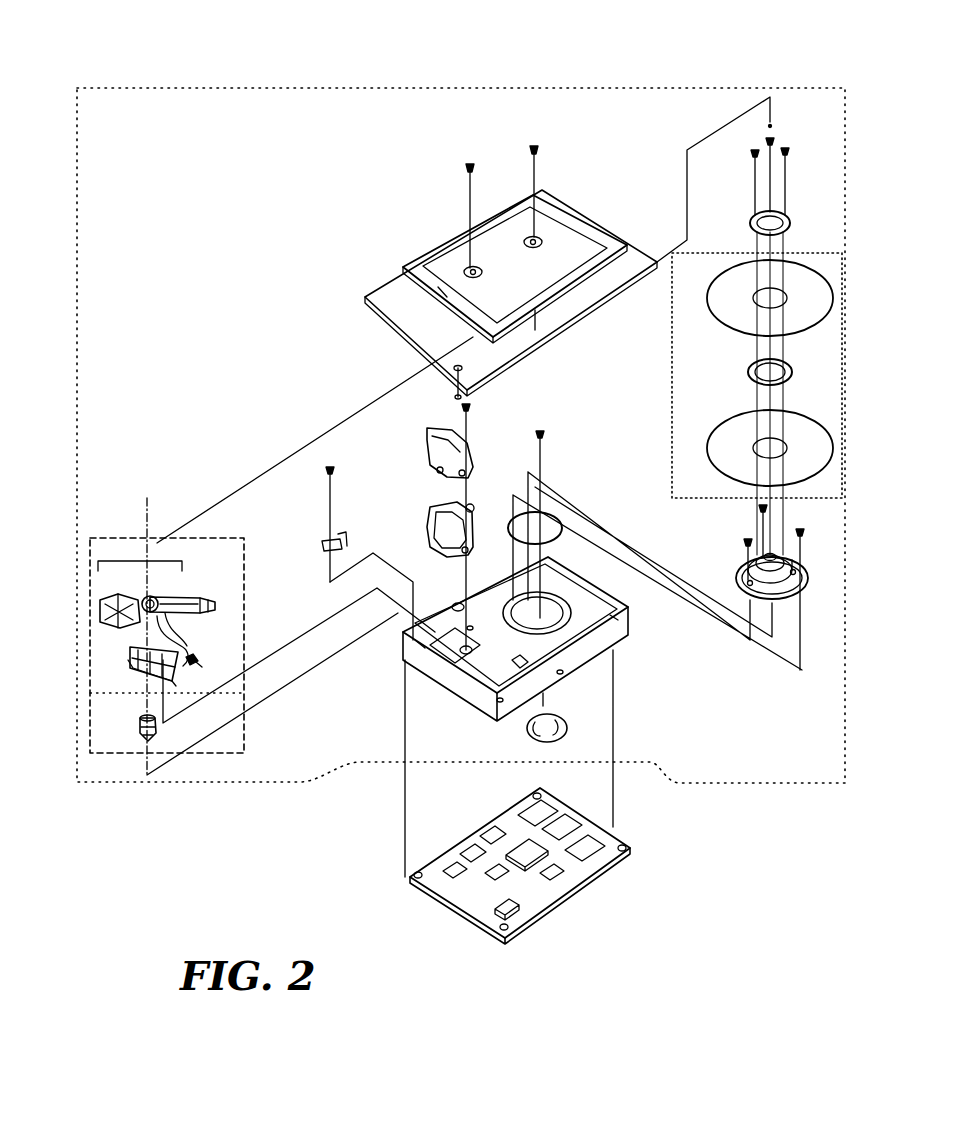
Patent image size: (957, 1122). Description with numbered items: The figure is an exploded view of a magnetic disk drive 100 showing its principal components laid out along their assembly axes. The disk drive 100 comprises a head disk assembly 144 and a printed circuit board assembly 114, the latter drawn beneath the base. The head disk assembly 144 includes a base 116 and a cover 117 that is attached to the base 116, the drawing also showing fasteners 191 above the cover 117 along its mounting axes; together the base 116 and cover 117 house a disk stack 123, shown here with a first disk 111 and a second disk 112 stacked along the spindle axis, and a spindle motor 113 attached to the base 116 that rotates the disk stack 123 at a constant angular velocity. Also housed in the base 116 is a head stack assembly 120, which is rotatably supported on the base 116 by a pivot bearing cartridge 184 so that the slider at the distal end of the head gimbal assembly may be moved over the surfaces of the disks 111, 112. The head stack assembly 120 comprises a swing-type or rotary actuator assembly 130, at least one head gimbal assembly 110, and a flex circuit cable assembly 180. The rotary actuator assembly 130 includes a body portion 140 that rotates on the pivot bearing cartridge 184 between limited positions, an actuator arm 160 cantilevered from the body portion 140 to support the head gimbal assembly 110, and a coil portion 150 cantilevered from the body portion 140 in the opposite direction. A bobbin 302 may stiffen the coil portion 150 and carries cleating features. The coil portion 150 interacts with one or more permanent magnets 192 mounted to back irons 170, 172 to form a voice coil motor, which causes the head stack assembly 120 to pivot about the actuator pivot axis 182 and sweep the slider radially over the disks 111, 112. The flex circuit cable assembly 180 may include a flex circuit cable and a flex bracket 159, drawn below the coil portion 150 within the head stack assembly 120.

The magnetic disk drive 100 is at (300, 66).
The head gimbal assembly 110 is at (212, 600).
The first disk 111 is at (716, 432).
The second disk 112 is at (731, 328).
The spindle motor 113 is at (741, 570).
The printed circuit board assembly 114 is at (565, 886).
The base 116 is at (622, 650).
The cover 117 is at (428, 252).
The head stack assembly 120 is at (125, 536).
The disk stack 123 is at (665, 428).
The rotary actuator assembly 130 is at (140, 556).
The body portion 140 is at (158, 598).
The head disk assembly 144 is at (700, 784).
The coil portion 150 is at (130, 648).
The flex bracket 159 is at (138, 666).
The actuator arm 160 is at (198, 624).
The back iron 170 is at (477, 447).
The back iron 172 is at (487, 500).
The flex circuit cable assembly 180 is at (200, 664).
The actuator pivot axis 182 is at (150, 503).
The pivot bearing cartridge 184 is at (138, 727).
The cover screws 191 is at (477, 158).
The permanent magnet 192 is at (428, 523).
The bobbin 302 is at (135, 597).